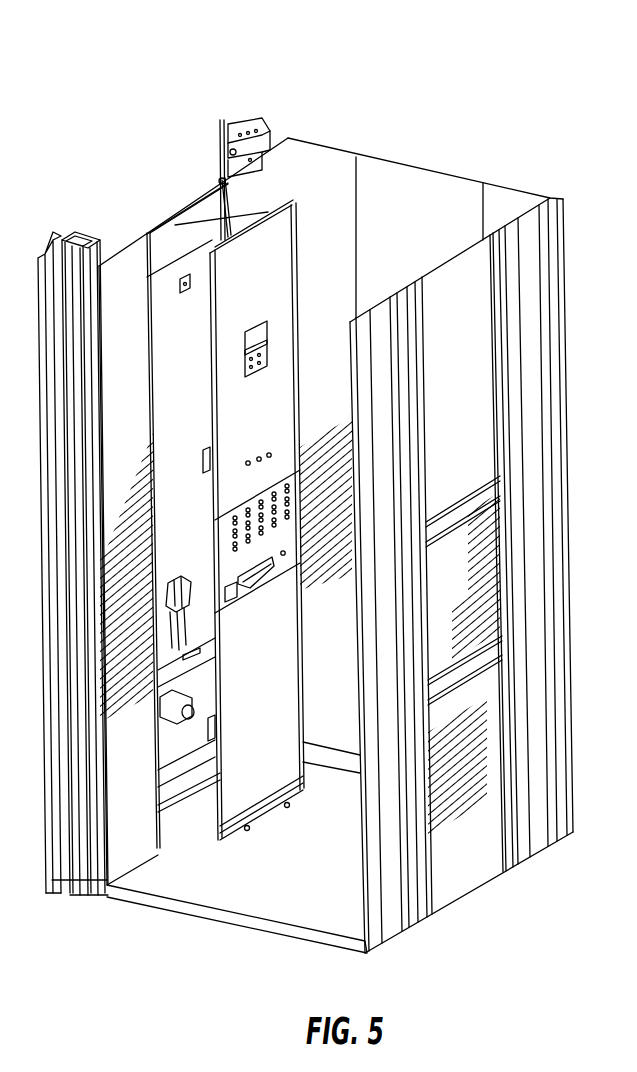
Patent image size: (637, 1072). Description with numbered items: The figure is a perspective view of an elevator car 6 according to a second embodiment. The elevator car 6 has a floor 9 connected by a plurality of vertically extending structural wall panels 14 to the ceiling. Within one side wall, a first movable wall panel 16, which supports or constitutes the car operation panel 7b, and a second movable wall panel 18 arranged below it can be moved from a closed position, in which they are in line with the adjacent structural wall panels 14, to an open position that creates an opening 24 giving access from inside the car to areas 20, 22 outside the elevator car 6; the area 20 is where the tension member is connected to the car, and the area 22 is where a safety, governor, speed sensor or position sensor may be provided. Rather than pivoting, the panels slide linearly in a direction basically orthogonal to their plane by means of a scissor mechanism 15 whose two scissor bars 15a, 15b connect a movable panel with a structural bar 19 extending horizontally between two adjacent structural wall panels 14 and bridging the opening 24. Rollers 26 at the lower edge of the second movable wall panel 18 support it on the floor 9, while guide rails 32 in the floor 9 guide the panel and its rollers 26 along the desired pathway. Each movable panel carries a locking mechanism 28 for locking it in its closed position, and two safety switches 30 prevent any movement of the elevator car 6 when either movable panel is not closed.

The elevator car 6 is at (499, 78).
The structural wall panel 14 is at (277, 160).
The structural bar 19 is at (157, 223).
The scissor mechanism 15 is at (200, 237).
The scissor bar 15a is at (190, 224).
The scissor bar 15b is at (224, 232).
The area 22 is at (219, 116).
The opening 24 is at (166, 371).
The guide rail 32 is at (190, 812).
The first movable wall panel 16 is at (230, 410).
The car operation panel 7b is at (289, 448).
The safety switch 30 is at (186, 292).
The locking mechanism 28 is at (203, 458).
The area 20 is at (181, 560).
The second movable wall panel 18 is at (260, 785).
The roller 26 is at (289, 807).
The floor 9 is at (203, 890).